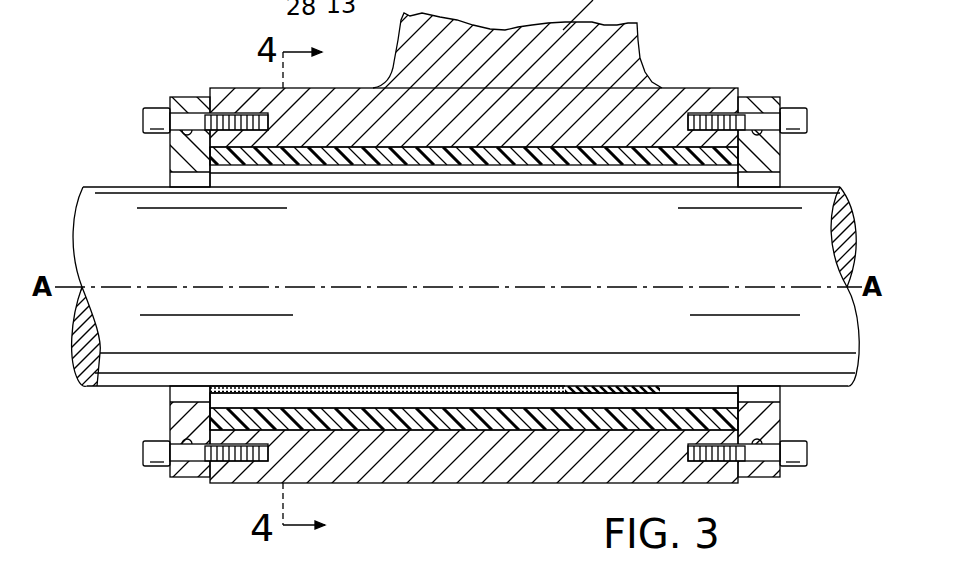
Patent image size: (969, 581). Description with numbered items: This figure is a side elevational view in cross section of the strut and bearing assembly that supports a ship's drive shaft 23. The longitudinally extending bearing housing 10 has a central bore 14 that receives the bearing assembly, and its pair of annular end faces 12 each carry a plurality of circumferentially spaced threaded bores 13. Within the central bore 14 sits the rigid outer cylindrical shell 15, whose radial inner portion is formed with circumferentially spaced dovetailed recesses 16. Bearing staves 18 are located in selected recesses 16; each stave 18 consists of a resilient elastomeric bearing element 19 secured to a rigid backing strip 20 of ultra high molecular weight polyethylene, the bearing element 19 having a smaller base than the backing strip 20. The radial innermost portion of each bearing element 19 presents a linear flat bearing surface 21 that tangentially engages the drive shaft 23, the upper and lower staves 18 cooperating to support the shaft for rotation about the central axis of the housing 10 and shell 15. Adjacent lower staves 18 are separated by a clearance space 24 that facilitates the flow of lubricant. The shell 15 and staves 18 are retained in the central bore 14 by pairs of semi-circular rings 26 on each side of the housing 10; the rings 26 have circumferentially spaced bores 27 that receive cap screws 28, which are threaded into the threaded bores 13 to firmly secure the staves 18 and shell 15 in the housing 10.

The bearing housing 10 is at (690, 88).
The annular end face 12 is at (211, 96).
The threaded bore 13 is at (241, 117).
The central bore 14 is at (365, 152).
The outer cylindrical shell 15 is at (472, 430).
The recess 16 is at (652, 170).
The bearing stave 18 is at (403, 408).
The bearing element 19 is at (548, 394).
The backing strip 20 is at (503, 400).
The bearing surface 21 is at (384, 389).
The drive shaft 23 is at (113, 218).
The clearance space 24 is at (344, 393).
The semi-circular ring 26 is at (180, 148).
The bore 27 is at (183, 113).
The cap screw 28 is at (150, 113).